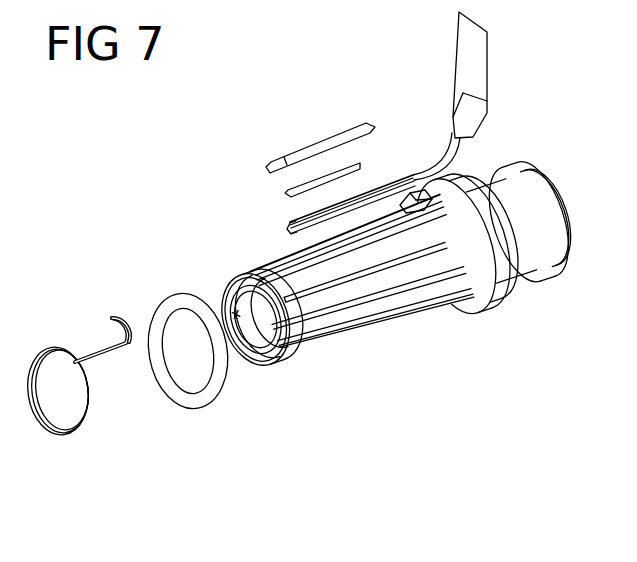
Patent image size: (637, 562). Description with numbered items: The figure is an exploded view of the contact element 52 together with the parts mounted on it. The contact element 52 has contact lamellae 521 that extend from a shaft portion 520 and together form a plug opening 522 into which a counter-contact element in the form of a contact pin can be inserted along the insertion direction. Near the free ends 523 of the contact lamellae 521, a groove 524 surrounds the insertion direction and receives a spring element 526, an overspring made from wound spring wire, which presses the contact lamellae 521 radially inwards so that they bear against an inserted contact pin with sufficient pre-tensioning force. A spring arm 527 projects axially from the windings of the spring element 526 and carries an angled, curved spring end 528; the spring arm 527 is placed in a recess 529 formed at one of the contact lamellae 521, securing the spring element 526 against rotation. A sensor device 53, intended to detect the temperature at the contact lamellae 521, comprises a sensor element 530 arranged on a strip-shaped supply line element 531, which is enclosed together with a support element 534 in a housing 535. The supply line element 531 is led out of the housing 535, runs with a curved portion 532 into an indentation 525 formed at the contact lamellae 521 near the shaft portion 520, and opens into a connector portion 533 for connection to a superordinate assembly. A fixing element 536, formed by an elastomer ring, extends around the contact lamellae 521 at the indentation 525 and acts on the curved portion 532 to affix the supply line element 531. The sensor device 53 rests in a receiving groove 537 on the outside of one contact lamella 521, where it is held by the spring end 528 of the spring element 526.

The contact element 52 is at (378, 288).
The sensor device 53 is at (362, 125).
The shaft portion 520 is at (525, 278).
The contact lamellae 521 is at (397, 265).
The plug opening 522 is at (203, 277).
The free ends 523 is at (266, 362).
The groove 524 is at (290, 360).
The indentation 525 is at (466, 295).
The spring element 526 is at (70, 434).
The spring arm 527 is at (115, 340).
The spring end 528 is at (120, 314).
The recess 529 is at (322, 277).
The sensor element 530 is at (289, 232).
The supply line element 531 is at (387, 177).
The curved portion 532 is at (433, 166).
The connector portion 533 is at (477, 82).
The support element 534 is at (286, 191).
The housing 535 is at (322, 153).
The fixing element 536 is at (205, 403).
The receiving groove 537 is at (433, 180).